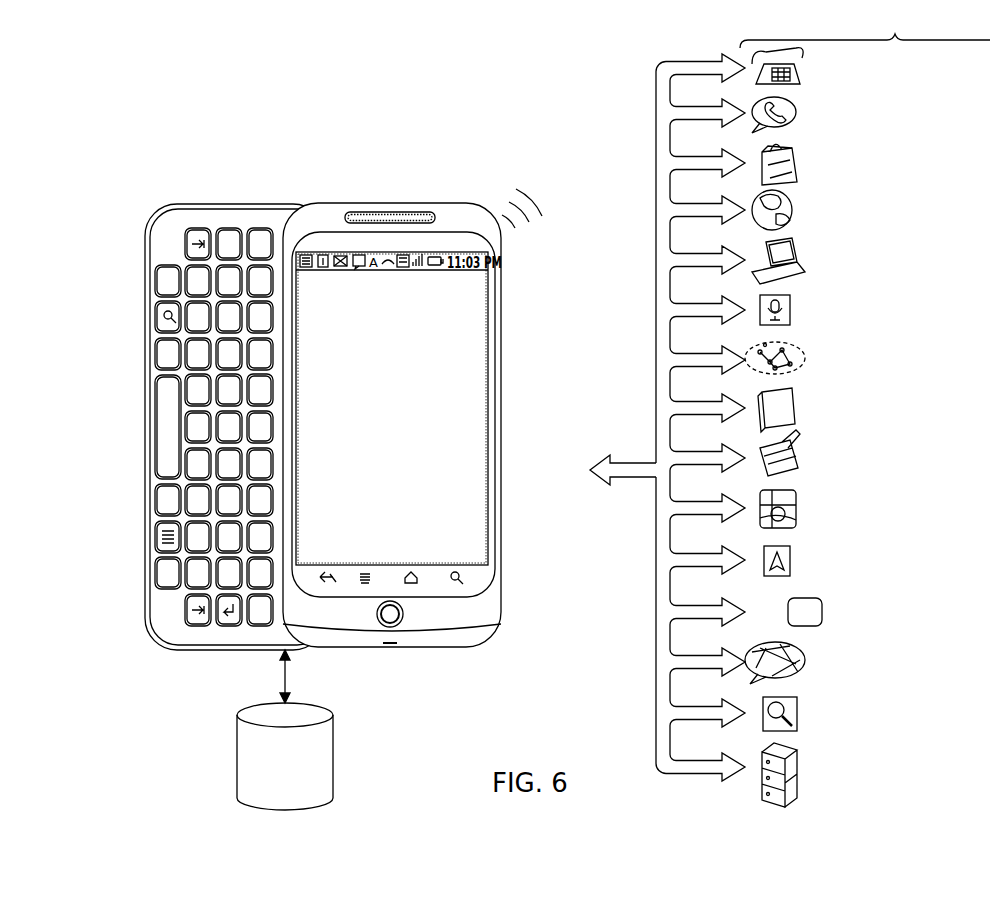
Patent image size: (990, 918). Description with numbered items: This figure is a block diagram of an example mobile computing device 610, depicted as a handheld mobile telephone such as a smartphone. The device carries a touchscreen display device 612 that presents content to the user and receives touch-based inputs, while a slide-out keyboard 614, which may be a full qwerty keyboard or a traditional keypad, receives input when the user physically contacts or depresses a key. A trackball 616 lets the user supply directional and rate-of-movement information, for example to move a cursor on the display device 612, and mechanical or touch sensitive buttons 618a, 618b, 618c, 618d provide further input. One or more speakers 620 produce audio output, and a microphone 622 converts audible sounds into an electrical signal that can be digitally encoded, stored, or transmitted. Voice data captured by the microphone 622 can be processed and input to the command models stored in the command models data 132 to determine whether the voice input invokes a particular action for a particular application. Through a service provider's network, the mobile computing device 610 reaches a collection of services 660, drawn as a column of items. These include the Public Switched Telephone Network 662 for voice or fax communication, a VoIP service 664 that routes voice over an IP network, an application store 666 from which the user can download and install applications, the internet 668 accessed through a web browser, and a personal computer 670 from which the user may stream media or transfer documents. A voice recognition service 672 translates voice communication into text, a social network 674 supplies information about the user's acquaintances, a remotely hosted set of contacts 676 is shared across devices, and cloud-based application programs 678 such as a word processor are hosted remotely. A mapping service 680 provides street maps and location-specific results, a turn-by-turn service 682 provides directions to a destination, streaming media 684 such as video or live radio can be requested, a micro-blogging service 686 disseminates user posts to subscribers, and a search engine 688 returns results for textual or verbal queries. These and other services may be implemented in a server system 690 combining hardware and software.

The mobile computing device 610 is at (443, 150).
The touchscreen display device 612 is at (490, 416).
The keyboard 614 is at (252, 204).
The trackball 616 is at (403, 617).
The button 618a is at (330, 572).
The button 618b is at (365, 571).
The button 618c is at (410, 571).
The button 618d is at (455, 571).
The speaker 620 is at (397, 212).
The microphone 622 is at (390, 648).
The command models data 132 is at (285, 730).
The services 660 is at (790, 409).
The Public Switched Telephone Network (PSTN) 662 is at (802, 72).
The Voice over Internet Protocol (VoIP) service 664 is at (796, 104).
The application store 666 is at (794, 160).
The internet 668 is at (792, 208).
The personal computer 670 is at (798, 255).
The voice recognition service 672 is at (790, 302).
The social network 674 is at (806, 350).
The contacts 676 is at (796, 404).
The cloud-based application programs 678 is at (798, 458).
The mapping service 680 is at (796, 498).
The turn-by-turn service 682 is at (790, 552).
The streaming media 684 is at (822, 604).
The micro-blogging service 686 is at (804, 652).
The search engine 688 is at (797, 704).
The server system 690 is at (797, 762).